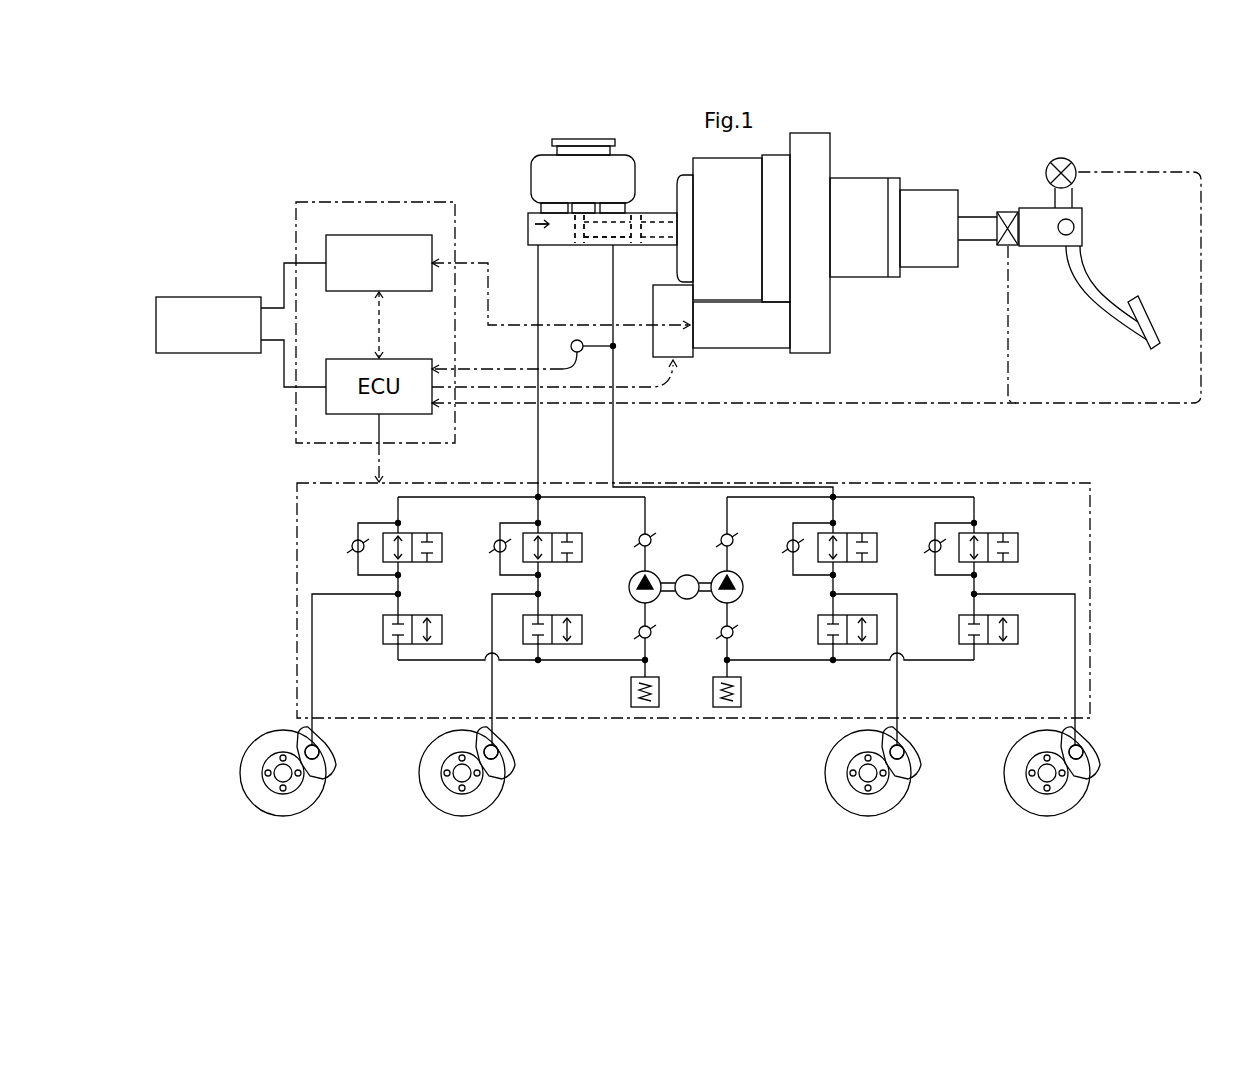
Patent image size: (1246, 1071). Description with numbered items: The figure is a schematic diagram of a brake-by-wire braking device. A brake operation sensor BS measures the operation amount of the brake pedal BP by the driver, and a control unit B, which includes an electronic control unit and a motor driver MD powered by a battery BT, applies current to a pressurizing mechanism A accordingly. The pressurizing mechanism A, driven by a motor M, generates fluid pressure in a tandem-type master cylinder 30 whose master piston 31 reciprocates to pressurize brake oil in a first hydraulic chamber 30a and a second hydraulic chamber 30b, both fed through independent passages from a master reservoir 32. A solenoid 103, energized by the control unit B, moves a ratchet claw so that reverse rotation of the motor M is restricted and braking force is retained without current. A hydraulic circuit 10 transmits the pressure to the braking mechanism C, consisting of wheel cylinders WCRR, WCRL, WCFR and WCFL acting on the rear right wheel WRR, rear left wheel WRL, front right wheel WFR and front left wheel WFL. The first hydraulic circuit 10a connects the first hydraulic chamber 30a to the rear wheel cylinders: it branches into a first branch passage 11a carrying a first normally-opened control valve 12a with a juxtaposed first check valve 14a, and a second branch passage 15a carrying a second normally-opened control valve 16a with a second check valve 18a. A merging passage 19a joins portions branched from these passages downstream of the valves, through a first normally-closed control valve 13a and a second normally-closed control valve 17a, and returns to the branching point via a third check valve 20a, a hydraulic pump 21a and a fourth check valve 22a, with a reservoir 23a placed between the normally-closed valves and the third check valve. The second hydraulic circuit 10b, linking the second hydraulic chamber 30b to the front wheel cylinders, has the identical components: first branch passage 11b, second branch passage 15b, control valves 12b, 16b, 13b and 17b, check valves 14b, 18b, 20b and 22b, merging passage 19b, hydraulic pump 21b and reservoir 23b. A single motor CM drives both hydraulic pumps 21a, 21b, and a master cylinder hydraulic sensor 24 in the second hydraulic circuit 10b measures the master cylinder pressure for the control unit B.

The hydraulic circuit 10 is at (1090, 545).
The first hydraulic circuit 10a is at (537, 440).
The second hydraulic circuit 10b is at (613, 440).
The first branch passage 11a is at (398, 497).
The first branch passage 11b is at (833, 500).
The first normally-opened control valve 12a is at (405, 533).
The first normally-opened control valve 12b is at (840, 533).
The first normally-closed control valve 13a is at (414, 615).
The first normally-closed control valve 13b is at (877, 628).
The first check valve 14a is at (355, 553).
The first check valve 14b is at (790, 552).
The second branch passage 15a is at (538, 503).
The second branch passage 15b is at (974, 503).
The second normally-opened control valve 16a is at (545, 533).
The second normally-opened control valve 16b is at (980, 533).
The second normally-closed control valve 17a is at (556, 615).
The second normally-closed control valve 17b is at (990, 643).
The second check valve 18a is at (497, 553).
The second check valve 18b is at (932, 553).
The merging passage 19a is at (458, 661).
The merging passage 19b is at (880, 661).
The third check valve 20a is at (640, 635).
The third check valve 20b is at (735, 635).
The hydraulic pump 21a is at (632, 584).
The hydraulic pump 21b is at (742, 584).
The fourth check valve 22a is at (640, 542).
The fourth check valve 22b is at (720, 535).
The reservoir 23a is at (645, 707).
The reservoir 23b is at (727, 707).
The master cylinder hydraulic sensor 24 is at (571, 346).
The master cylinder 30 is at (657, 215).
The first hydraulic chamber 30a is at (538, 225).
The second hydraulic chamber 30b is at (600, 232).
The master piston 31 is at (575, 232).
The master reservoir 32 is at (536, 172).
The solenoid 103 is at (690, 357).
The pressurizing mechanism A is at (878, 316).
The control unit B is at (357, 201).
The battery BT is at (200, 297).
The motor driver MD is at (380, 235).
The motor M is at (730, 318).
The brake operation sensor BS is at (1009, 208).
The brake pedal BP is at (1155, 313).
The braking mechanism C is at (243, 720).
The motor CM is at (687, 575).
The rear right wheel WRR is at (272, 805).
The rear left wheel WRL is at (462, 805).
The front right wheel WFR is at (857, 800).
The front left wheel WFL is at (1045, 800).
The rear right wheel cylinder WCRR is at (328, 762).
The rear left wheel cylinder WCRL is at (507, 762).
The front right wheel cylinder WCFR is at (913, 760).
The front left wheel cylinder WCFL is at (1093, 760).